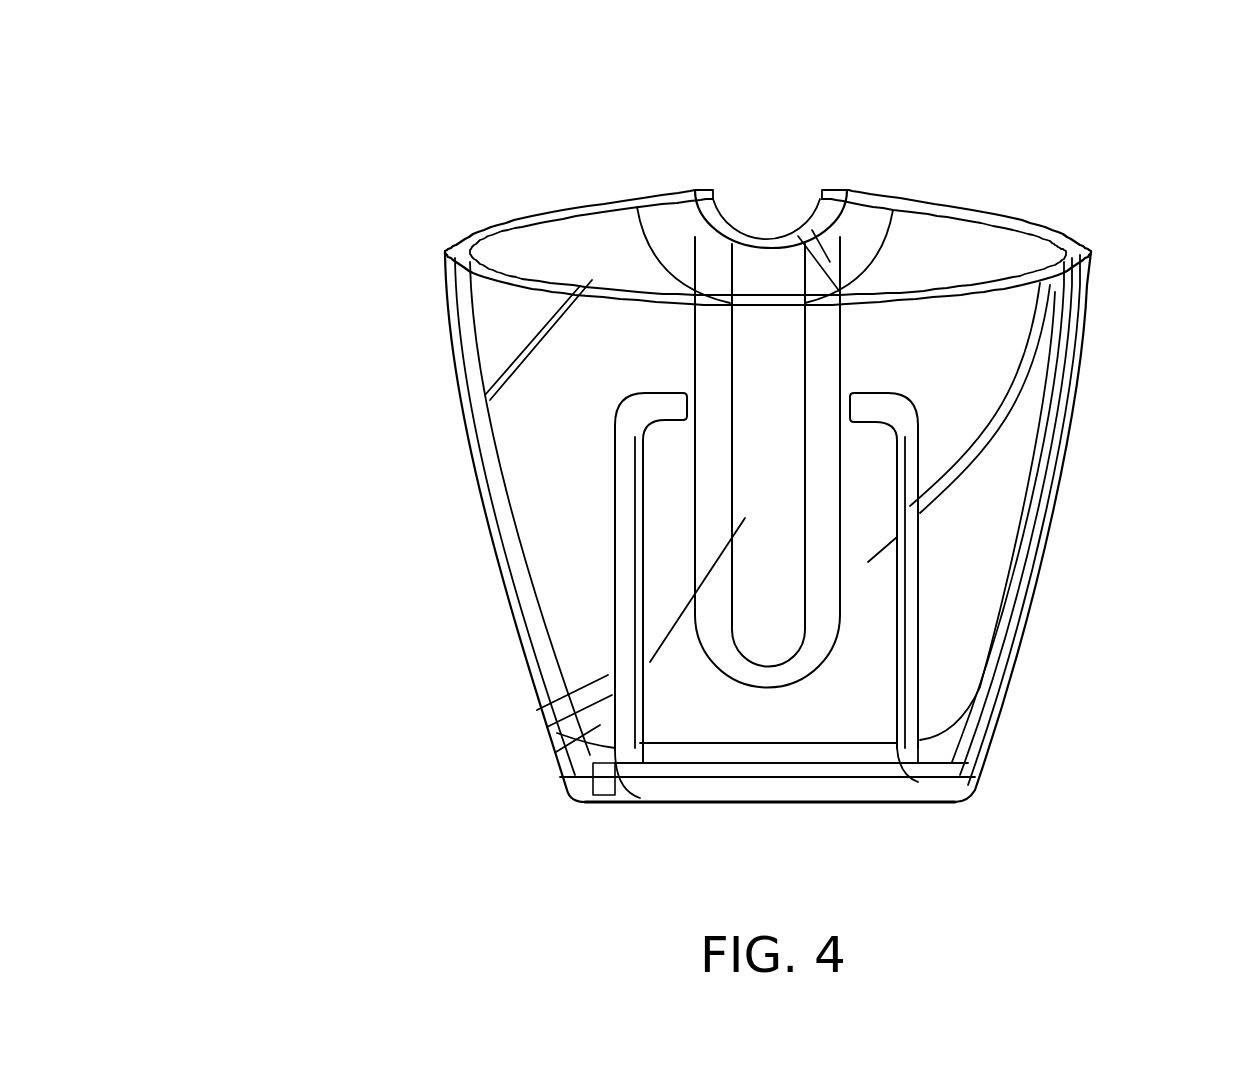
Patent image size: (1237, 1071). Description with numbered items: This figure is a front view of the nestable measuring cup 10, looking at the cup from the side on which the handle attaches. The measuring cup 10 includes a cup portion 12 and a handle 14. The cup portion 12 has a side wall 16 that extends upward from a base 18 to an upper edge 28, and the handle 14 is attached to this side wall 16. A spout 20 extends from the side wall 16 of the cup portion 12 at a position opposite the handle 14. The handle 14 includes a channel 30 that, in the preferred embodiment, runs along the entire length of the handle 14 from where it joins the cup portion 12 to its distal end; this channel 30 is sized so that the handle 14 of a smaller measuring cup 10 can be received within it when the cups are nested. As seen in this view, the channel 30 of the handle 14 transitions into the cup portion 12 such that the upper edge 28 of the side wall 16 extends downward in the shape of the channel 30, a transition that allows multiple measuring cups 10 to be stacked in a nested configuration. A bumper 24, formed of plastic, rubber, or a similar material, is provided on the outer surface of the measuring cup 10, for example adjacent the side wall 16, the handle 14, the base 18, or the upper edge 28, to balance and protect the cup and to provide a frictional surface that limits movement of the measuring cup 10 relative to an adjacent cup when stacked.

The nestable measuring cup 10 is at (268, 147).
The cup portion 12 is at (1005, 508).
The handle 14 is at (790, 600).
The side wall 16 is at (992, 565).
The base 18 is at (718, 805).
The spout 20 is at (780, 312).
The bumper 24 is at (620, 432).
The upper edge 28 is at (1078, 248).
The channel 30 is at (768, 218).